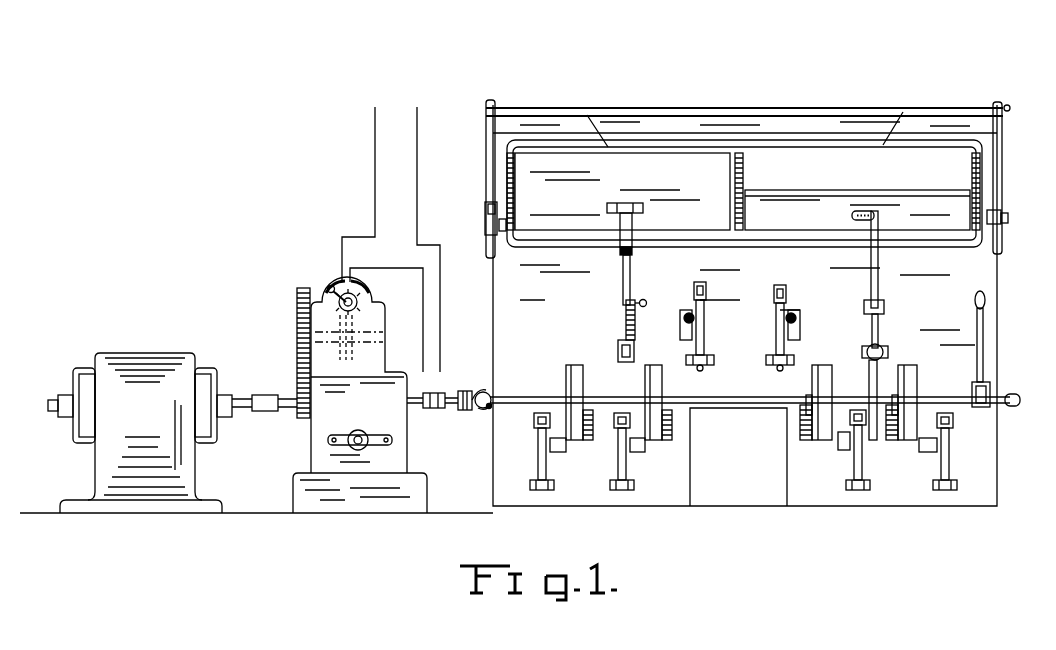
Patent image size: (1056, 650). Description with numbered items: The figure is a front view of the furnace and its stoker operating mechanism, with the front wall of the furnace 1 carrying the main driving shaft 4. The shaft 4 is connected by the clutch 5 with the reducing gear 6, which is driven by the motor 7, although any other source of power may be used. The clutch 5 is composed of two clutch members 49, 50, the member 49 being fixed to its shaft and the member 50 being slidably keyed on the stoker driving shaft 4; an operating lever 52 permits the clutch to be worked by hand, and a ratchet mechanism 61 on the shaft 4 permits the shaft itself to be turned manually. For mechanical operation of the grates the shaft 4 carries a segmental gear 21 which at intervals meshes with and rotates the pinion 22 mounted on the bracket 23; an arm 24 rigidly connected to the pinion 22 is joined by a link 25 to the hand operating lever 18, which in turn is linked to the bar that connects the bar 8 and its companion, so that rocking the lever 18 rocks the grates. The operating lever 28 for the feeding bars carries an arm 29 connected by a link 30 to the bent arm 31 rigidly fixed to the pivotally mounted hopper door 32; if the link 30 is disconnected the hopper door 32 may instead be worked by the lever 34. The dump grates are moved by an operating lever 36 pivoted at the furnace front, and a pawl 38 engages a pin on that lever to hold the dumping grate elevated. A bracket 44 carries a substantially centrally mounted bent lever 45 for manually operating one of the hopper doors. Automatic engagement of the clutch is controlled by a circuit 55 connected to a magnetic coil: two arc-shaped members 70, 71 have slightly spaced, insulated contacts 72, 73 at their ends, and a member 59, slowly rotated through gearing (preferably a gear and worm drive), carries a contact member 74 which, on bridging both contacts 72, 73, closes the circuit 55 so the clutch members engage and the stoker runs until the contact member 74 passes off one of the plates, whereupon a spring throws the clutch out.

The front wall of the furnace 1 is at (975, 272).
The main driving shaft 4 is at (522, 395).
The clutch 5 is at (467, 412).
The reducing gear 6 is at (325, 410).
The motor 7 is at (140, 378).
The bar 8 is at (705, 524).
The lever 18 is at (547, 474).
The segmental gear 21 is at (899, 372).
The pinion 22 is at (584, 445).
The bracket 23 is at (574, 365).
The arm 24 is at (564, 424).
The link 25 is at (845, 448).
The operating lever 28 is at (863, 480).
The arm 29 is at (871, 388).
The link 30 is at (879, 334).
The bent arm 31 is at (872, 282).
The hopper door 32 is at (743, 191).
The lever 34 is at (486, 223).
The operating lever 36 is at (706, 297).
The pawl 38 is at (686, 308).
The bracket 44 is at (640, 316).
The bent lever 45 is at (624, 342).
The clutch member 49 is at (431, 410).
The clutch member 50 is at (482, 392).
The operating lever 52 is at (489, 410).
The circuit 55 is at (375, 237).
The member 59 is at (298, 322).
The ratchet mechanism 61 is at (986, 396).
The arc-shaped member 70 is at (322, 294).
The arc-shaped member 71 is at (378, 297).
The contact 72 is at (341, 280).
The contact 73 is at (372, 274).
The contact member 74 is at (329, 287).